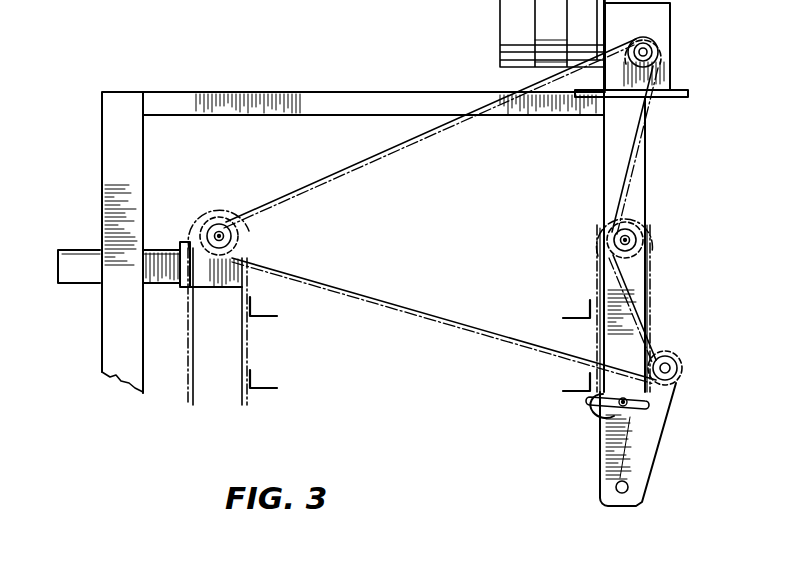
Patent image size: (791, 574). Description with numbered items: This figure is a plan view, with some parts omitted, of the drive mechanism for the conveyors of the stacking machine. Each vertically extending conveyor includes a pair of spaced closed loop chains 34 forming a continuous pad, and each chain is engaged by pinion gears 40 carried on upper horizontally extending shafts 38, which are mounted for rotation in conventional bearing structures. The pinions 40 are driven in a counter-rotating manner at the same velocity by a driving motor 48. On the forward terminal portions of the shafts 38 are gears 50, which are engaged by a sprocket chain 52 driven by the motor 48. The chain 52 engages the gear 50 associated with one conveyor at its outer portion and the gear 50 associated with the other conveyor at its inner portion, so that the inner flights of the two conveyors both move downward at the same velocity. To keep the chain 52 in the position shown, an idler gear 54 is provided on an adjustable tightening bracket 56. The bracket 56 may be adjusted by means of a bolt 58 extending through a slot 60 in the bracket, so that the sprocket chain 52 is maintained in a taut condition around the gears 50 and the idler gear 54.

The closed loop chains 34 is at (188, 393).
The upper horizontally extending shafts 38 is at (233, 232).
The pinion gears 40 is at (212, 217).
The driving motor 48 is at (503, 33).
The gears 50 is at (230, 240).
The sprocket chain 52 is at (365, 160).
The idler gear 54 is at (673, 357).
The adjustable tightening bracket 56 is at (653, 435).
The bolt 58 is at (595, 417).
The slot 60 is at (588, 403).